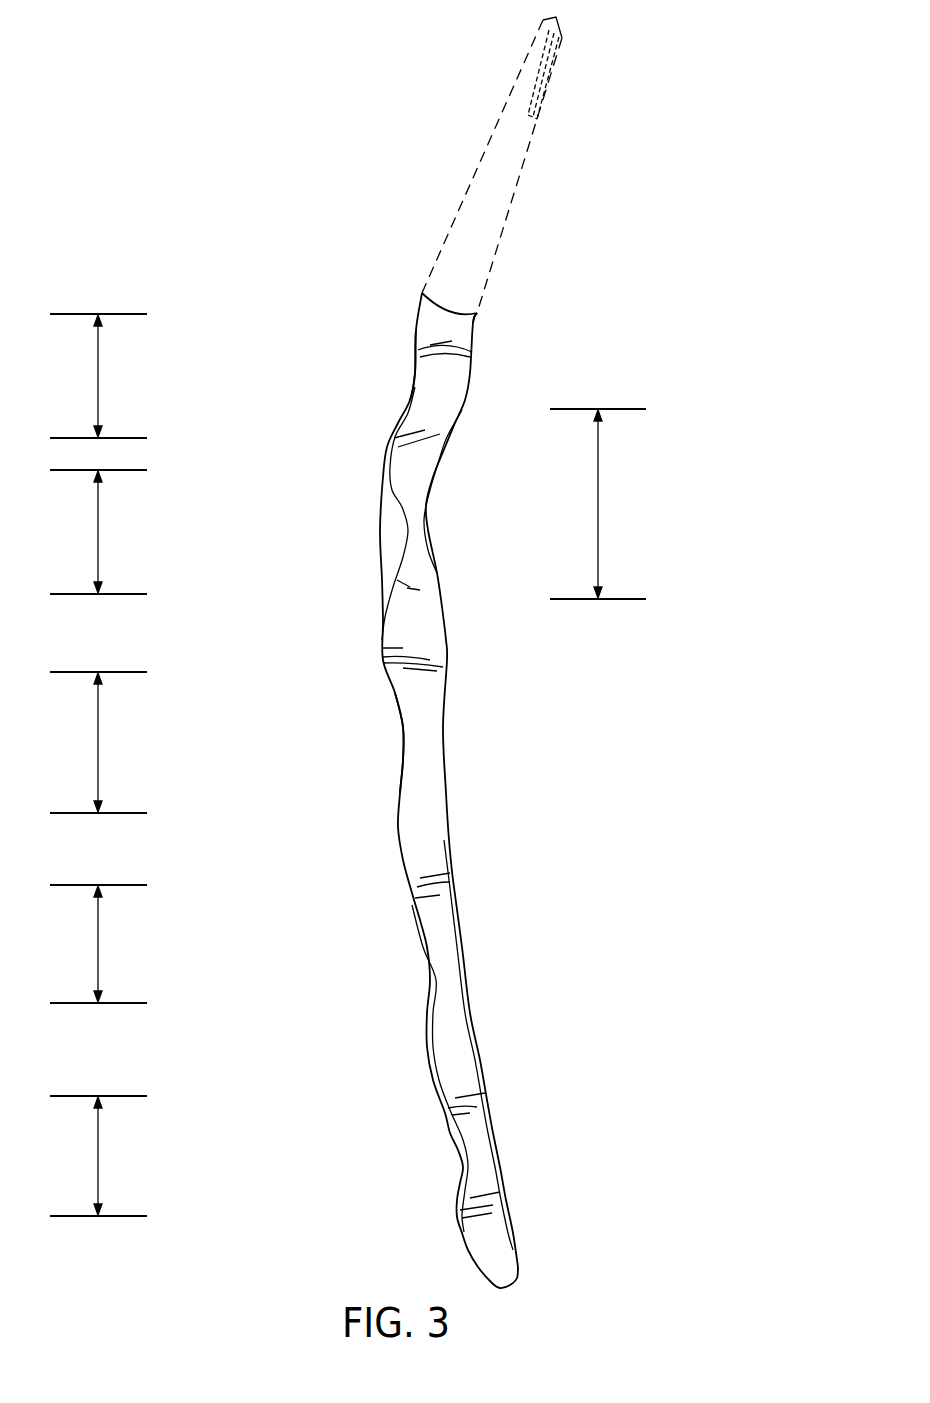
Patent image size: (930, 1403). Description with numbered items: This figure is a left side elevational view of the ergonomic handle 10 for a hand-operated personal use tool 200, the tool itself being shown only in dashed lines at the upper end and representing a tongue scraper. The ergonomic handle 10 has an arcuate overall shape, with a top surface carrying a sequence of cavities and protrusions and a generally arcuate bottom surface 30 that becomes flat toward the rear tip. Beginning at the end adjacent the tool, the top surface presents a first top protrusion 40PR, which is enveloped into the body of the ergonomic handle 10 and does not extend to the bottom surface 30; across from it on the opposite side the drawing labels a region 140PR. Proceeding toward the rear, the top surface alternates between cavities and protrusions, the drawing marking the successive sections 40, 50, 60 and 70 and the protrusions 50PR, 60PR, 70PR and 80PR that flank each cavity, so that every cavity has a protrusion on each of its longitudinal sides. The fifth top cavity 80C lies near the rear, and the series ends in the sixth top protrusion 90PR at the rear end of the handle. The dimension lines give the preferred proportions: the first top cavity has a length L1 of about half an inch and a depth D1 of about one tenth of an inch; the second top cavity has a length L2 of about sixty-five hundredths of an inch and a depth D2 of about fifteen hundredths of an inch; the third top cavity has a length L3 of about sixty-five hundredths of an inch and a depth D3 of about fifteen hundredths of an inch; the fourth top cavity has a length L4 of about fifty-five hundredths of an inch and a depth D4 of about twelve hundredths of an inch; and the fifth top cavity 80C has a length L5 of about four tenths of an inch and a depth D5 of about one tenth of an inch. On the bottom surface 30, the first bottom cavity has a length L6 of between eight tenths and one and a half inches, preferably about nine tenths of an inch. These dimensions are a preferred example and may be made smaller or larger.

The ergonomic handle 10 is at (616, 686).
The hand-operated personal use tool 200 is at (540, 172).
The bottom surface 30 is at (308, 485).
The first handle segment 40 is at (410, 396).
The first top protrusion 40PR is at (413, 316).
The pinch region 140PR is at (475, 382).
The depth of first top cavity D1 is at (413, 368).
The second handle segment 50 is at (385, 535).
The second pinch region 50PR is at (385, 452).
The depth of second top cavity D2 is at (383, 567).
The third handle segment 60 is at (414, 733).
The third pinch region 60PR is at (382, 648).
The depth of third top cavity D3 is at (411, 770).
The fourth handle segment 70 is at (424, 945).
The fourth pinch region 70PR is at (397, 846).
The depth of fourth top cavity D4 is at (429, 977).
The fifth top cavity 80C is at (470, 1148).
The fifth pinch region 80PR is at (426, 1053).
The depth of fifth top cavity D5 is at (458, 1190).
The sixth top protrusion 90PR is at (460, 1237).
The length of first top cavity L1 is at (97, 376).
The length of second top cavity L2 is at (97, 532).
The length of third top cavity L3 is at (93, 742).
The length of fourth top cavity L4 is at (93, 944).
The length of fifth top cavity L5 is at (93, 1156).
The length of first bottom cavity L6 is at (605, 504).